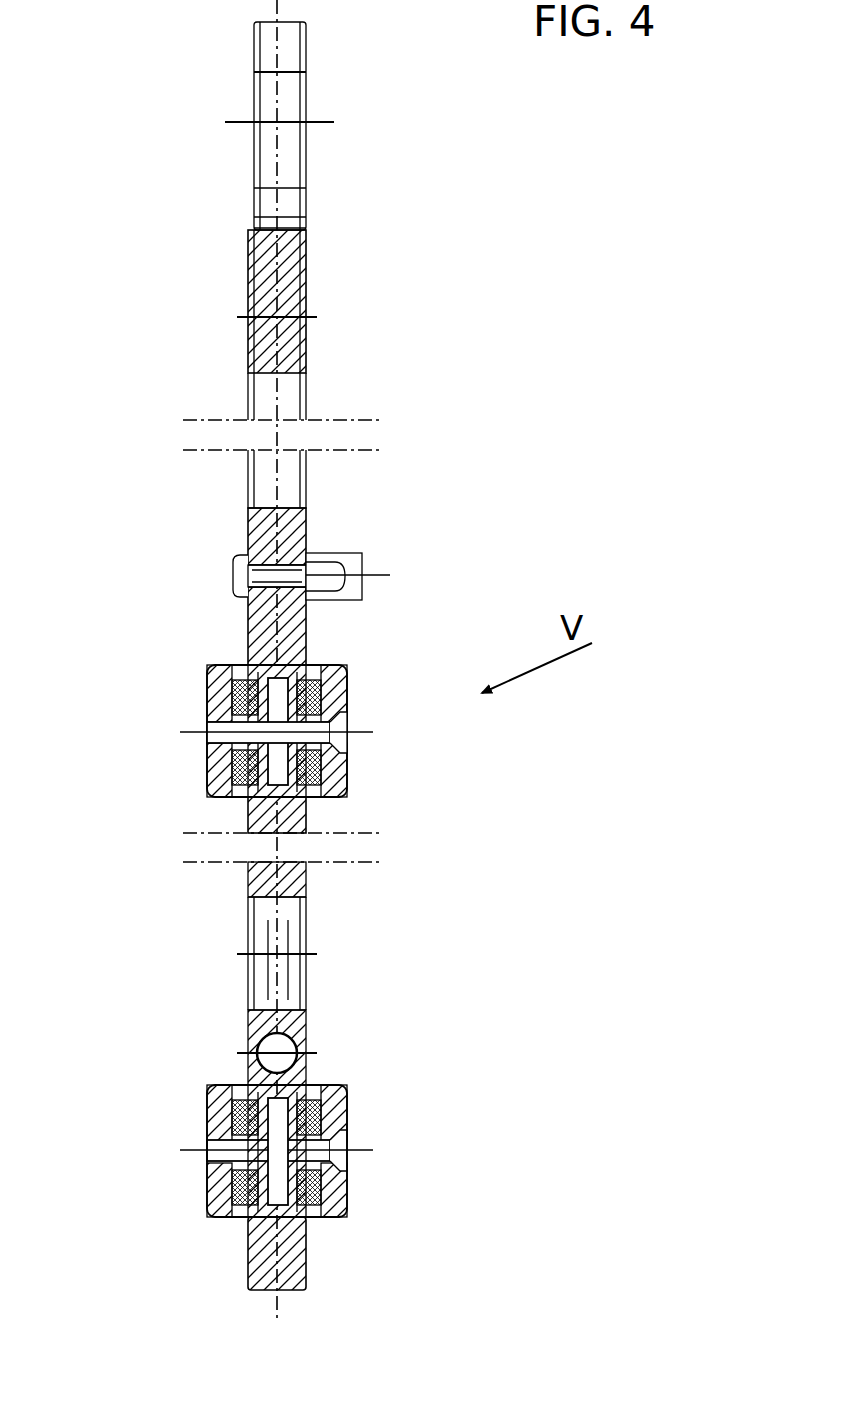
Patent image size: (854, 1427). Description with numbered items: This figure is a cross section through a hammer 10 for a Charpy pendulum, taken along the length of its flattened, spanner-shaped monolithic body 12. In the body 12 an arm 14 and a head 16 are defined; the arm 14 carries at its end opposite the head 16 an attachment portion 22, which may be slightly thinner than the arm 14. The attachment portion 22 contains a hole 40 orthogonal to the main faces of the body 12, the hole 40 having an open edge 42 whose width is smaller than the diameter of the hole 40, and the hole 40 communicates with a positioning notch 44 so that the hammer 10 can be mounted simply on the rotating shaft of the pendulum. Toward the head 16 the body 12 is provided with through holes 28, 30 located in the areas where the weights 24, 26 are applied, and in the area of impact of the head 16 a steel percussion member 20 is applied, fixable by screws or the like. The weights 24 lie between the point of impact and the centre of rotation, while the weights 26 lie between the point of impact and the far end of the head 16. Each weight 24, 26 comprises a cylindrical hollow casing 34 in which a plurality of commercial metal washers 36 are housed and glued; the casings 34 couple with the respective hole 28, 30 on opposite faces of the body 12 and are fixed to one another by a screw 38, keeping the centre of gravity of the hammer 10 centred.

The hammer 10 is at (590, 283).
The monolithic body 12 is at (333, 393).
The arm 14 is at (312, 496).
The head 16 is at (312, 880).
The percussion member 20 is at (268, 940).
The attachment portion 22 is at (303, 263).
The weights 24 is at (268, 930).
The weights 26 is at (197, 1072).
The through hole 28 is at (288, 690).
The through hole 30 is at (288, 1108).
The cylindrical hollow casing 34 is at (207, 758).
The metal washers 36 is at (225, 795).
The screw 38 is at (207, 735).
The hole 40 is at (284, 188).
The open edge 42 is at (268, 45).
The positioning notch 44 is at (262, 197).